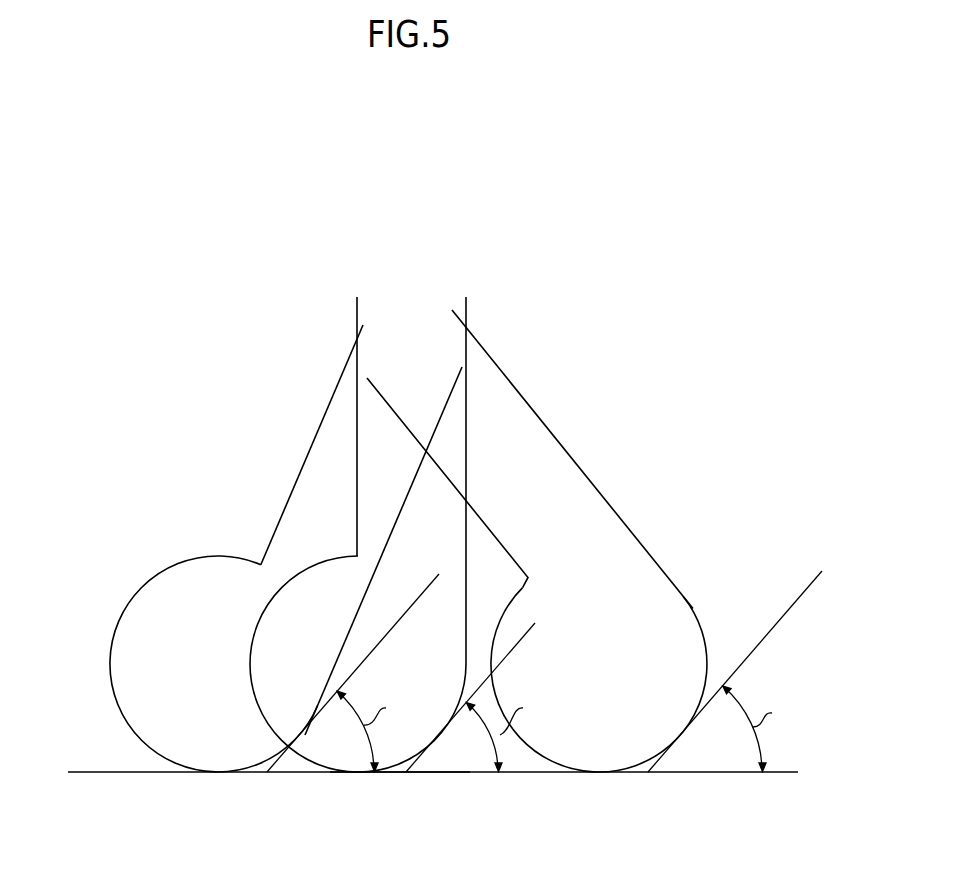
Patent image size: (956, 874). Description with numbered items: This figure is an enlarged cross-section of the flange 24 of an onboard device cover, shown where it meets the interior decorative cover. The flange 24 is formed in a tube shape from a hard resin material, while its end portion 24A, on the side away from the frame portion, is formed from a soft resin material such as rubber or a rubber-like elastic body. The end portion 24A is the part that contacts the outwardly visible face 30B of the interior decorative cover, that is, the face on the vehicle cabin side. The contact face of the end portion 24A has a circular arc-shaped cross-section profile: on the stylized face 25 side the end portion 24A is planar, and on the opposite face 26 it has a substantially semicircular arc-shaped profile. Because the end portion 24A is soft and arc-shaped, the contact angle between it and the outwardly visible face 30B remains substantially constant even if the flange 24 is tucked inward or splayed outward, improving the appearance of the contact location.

The nozzle 24 is at (467, 425).
The nozzle surface 24A is at (400, 773).
The ink droplet (detaching) 25 is at (467, 615).
The ink droplet (inclined) 26 is at (248, 625).
The wiping surface 30B is at (103, 772).